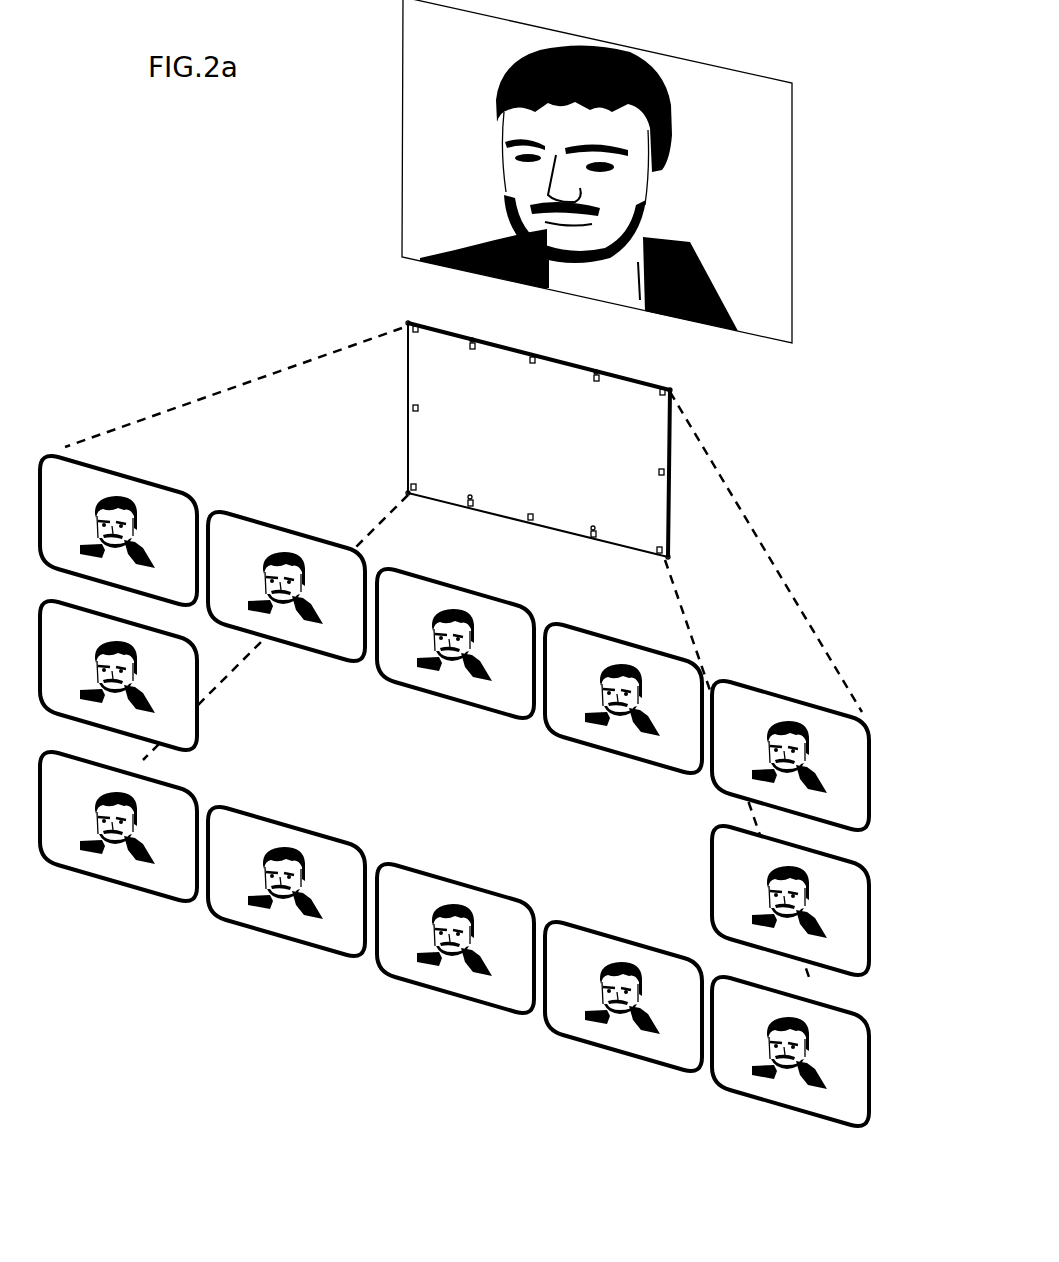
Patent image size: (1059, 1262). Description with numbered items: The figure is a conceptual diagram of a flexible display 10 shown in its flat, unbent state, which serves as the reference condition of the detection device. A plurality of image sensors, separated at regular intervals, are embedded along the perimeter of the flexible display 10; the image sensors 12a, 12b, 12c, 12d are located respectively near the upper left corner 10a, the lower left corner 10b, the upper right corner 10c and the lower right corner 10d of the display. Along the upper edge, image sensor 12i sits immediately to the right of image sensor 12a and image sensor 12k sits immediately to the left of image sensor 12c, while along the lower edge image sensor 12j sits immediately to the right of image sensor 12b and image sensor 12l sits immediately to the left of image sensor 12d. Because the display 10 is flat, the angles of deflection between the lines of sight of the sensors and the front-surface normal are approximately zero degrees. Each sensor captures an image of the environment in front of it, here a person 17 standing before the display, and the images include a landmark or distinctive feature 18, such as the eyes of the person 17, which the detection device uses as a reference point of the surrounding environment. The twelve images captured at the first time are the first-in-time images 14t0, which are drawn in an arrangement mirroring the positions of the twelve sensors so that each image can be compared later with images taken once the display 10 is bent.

The flexible display 10 is at (446, 334).
The upper left corner 10a is at (408, 330).
The lower left corner 10b is at (405, 490).
The upper right corner 10c is at (683, 397).
The lower right corner 10d is at (665, 560).
The image sensor 12a is at (408, 326).
The image sensor 12b is at (407, 486).
The image sensor 12c is at (668, 386).
The image sensor 12d is at (668, 550).
The image sensor 12i is at (473, 342).
The image sensor 12j is at (470, 505).
The image sensor 12k is at (597, 375).
The image sensor 12l is at (594, 537).
The first-in-time images 14t0 is at (713, 974).
The person 17 is at (496, 107).
The landmark/distinctive feature 18 is at (598, 167).